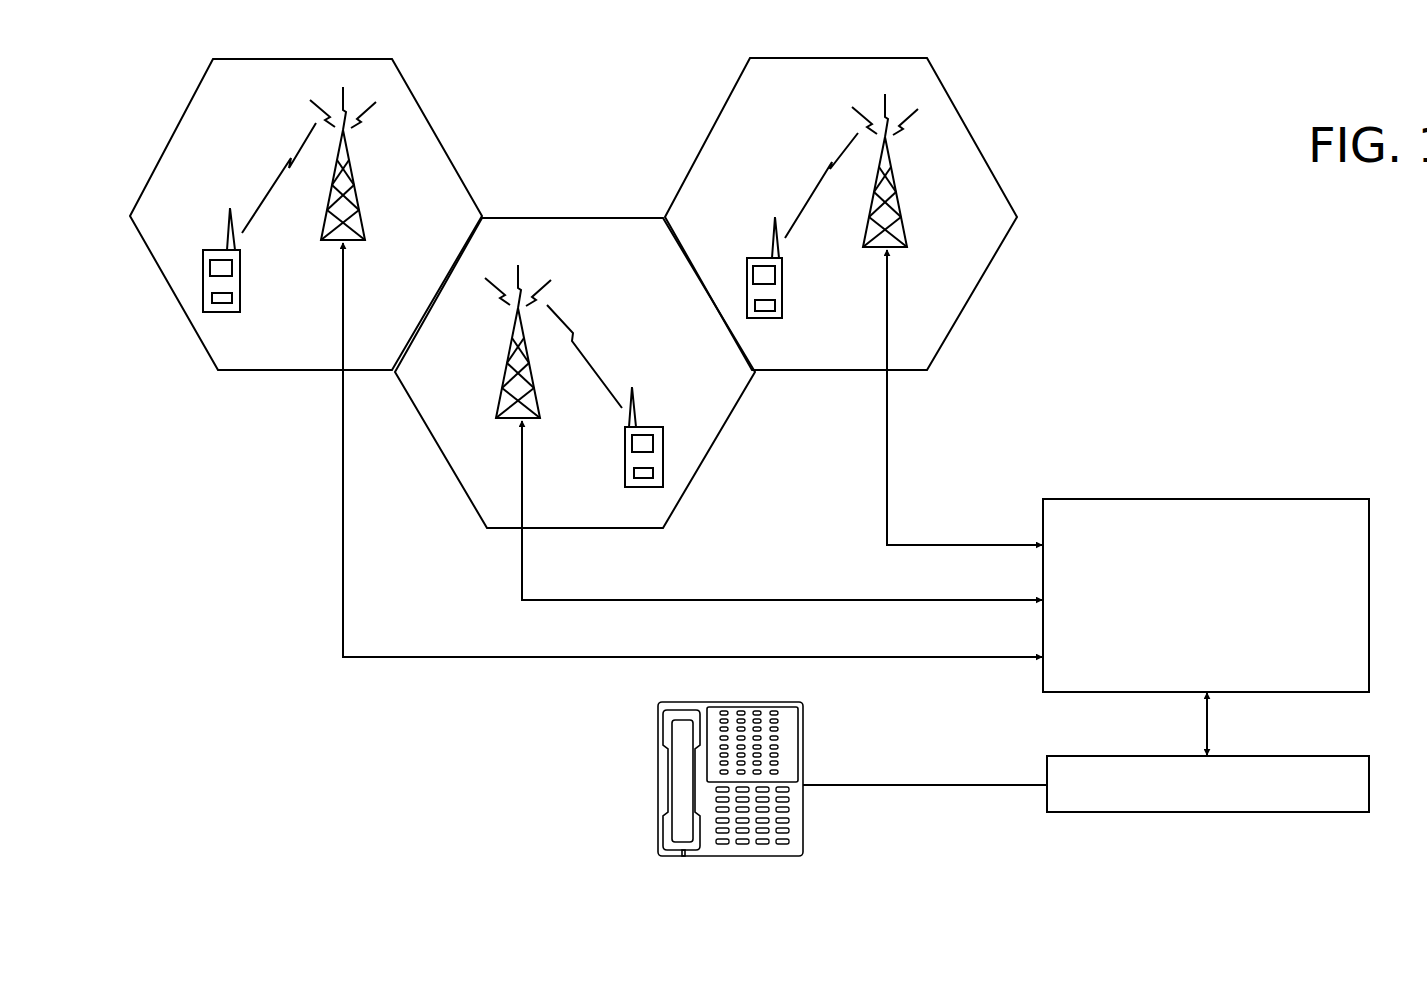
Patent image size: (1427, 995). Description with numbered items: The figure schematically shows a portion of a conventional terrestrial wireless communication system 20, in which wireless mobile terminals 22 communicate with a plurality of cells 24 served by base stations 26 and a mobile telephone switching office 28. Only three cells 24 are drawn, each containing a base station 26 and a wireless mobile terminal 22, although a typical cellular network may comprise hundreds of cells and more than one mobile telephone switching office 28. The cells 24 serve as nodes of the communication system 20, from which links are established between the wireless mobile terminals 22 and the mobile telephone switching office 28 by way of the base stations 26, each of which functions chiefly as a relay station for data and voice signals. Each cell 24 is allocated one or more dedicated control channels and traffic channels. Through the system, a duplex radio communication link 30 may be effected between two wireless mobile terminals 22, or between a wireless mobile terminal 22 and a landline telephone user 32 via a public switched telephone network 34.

The terrestrial wireless communication system 20 is at (1075, 168).
The wireless mobile terminal 22 is at (208, 250).
The cell 24 is at (355, 58).
The base station 26 is at (365, 174).
The mobile telephone switching office 28 is at (1322, 499).
The duplex radio communication link 30 is at (261, 176).
The landline telephone user 32 is at (657, 752).
The public switched telephone network 34 is at (1296, 812).